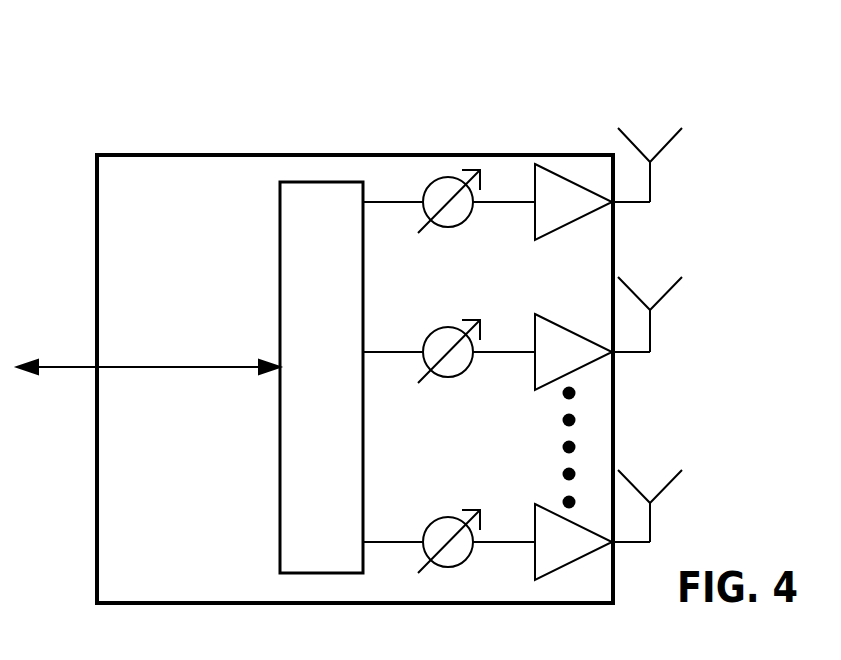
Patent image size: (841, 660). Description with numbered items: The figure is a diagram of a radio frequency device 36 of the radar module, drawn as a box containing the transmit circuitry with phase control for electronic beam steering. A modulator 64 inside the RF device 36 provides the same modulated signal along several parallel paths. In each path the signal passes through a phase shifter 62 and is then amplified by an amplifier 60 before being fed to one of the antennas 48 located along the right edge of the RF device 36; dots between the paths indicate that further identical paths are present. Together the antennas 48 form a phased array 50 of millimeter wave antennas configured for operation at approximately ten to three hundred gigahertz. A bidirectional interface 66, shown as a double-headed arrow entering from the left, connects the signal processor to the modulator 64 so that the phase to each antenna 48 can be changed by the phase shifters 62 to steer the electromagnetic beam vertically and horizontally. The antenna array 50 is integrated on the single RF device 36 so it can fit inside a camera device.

The RF device 36 is at (190, 155).
The modulator 64 is at (318, 182).
The phase shifter 62 is at (447, 177).
The amplifier 60 is at (584, 188).
The antenna 48 is at (650, 181).
The phased array 50 is at (600, 420).
The interface 66 is at (60, 365).